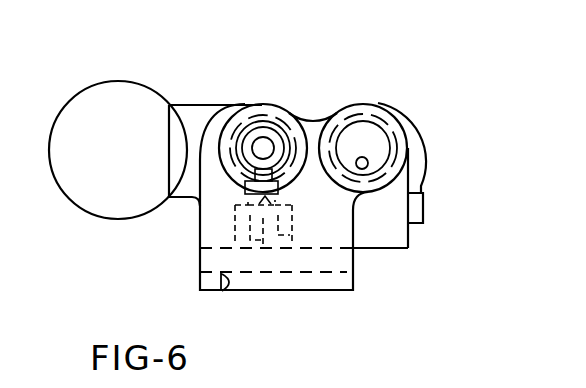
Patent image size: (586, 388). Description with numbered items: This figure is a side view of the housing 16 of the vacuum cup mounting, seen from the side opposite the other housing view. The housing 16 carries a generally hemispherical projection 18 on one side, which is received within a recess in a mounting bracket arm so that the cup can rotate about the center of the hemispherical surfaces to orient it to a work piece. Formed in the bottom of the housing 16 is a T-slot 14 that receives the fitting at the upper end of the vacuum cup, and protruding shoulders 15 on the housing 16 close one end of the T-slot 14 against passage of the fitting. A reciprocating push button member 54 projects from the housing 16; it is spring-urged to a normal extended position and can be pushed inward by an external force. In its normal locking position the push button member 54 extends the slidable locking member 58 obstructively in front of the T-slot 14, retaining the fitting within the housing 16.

The T-slot 14 is at (318, 262).
The protruding shoulders 15 is at (230, 291).
The housing 16 is at (322, 117).
The hemispherical projection 18 is at (104, 84).
The push button member 54 is at (428, 190).
The slidable locking member 58 is at (360, 252).